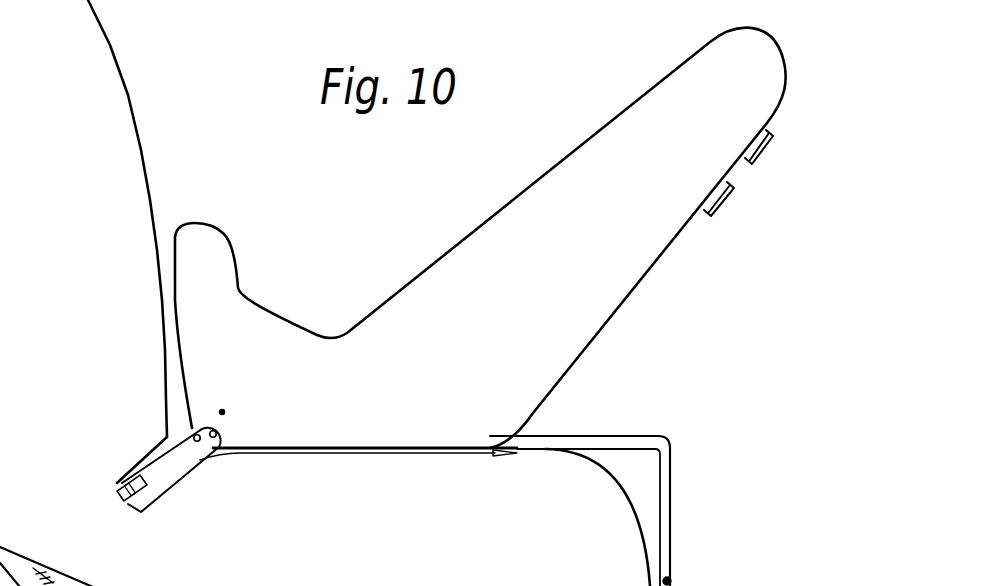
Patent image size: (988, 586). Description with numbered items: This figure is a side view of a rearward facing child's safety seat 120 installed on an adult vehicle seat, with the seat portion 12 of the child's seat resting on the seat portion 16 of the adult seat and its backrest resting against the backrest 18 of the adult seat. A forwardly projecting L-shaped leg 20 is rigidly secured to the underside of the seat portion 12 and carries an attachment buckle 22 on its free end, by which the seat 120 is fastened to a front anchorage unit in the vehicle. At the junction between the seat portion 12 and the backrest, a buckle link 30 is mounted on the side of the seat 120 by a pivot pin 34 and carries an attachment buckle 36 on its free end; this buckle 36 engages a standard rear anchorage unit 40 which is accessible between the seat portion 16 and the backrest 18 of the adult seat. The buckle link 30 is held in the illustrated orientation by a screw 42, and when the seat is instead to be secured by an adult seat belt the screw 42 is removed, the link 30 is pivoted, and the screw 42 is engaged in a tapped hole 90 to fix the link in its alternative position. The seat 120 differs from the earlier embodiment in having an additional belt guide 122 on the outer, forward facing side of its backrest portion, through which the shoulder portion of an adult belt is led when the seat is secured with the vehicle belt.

The seat portion 12 is at (490, 455).
The seat portion of the adult seat 16 is at (283, 453).
The backrest of the adult seat 18 is at (128, 95).
The L-shaped leg 20 is at (567, 437).
The attachment buckle 22 is at (672, 578).
The buckle link 30 is at (177, 465).
The pivot pin 34 is at (225, 435).
The attachment buckle 36 is at (127, 473).
The rear anchorage unit 40 is at (122, 500).
The screw 42 is at (193, 430).
The tapped hole 90 is at (222, 412).
The seat 120 is at (402, 284).
The additional belt guide 122 is at (717, 211).